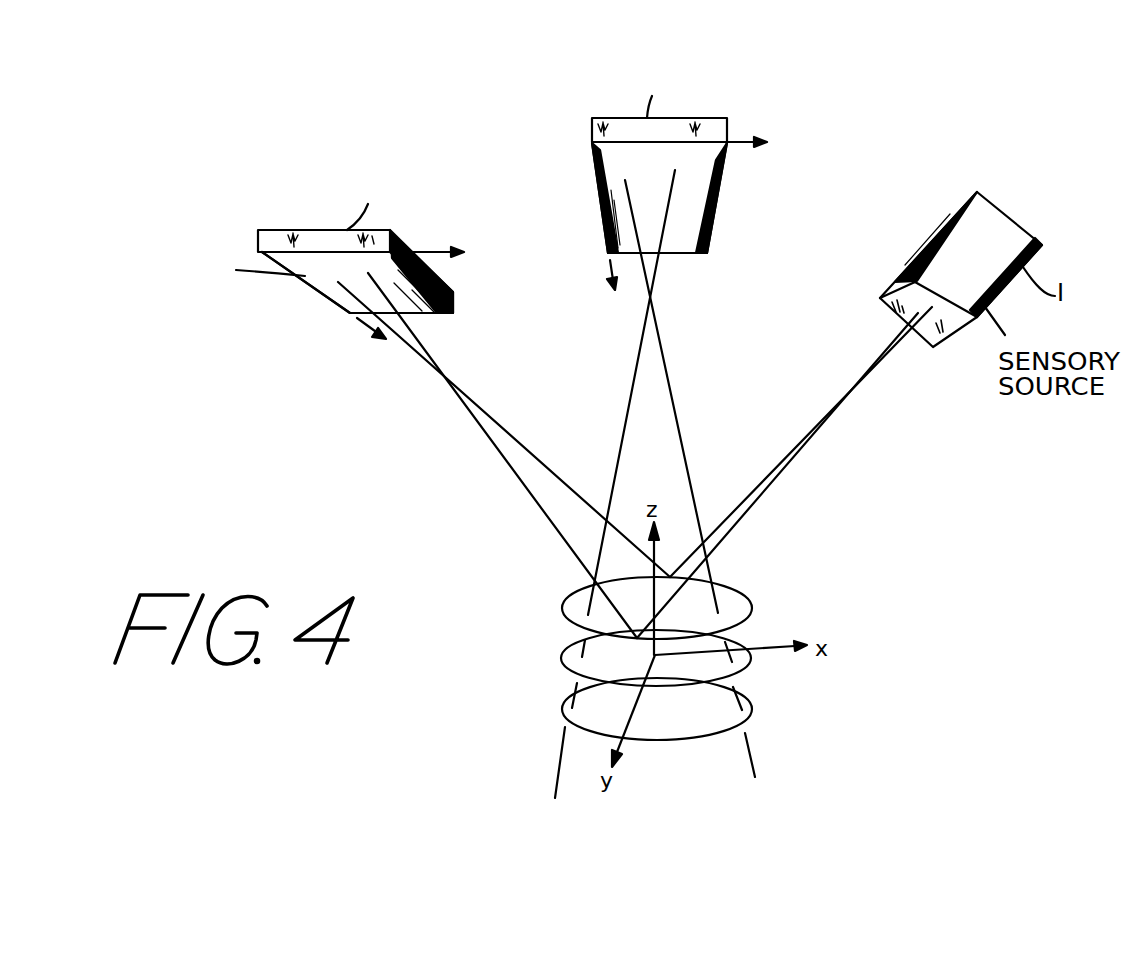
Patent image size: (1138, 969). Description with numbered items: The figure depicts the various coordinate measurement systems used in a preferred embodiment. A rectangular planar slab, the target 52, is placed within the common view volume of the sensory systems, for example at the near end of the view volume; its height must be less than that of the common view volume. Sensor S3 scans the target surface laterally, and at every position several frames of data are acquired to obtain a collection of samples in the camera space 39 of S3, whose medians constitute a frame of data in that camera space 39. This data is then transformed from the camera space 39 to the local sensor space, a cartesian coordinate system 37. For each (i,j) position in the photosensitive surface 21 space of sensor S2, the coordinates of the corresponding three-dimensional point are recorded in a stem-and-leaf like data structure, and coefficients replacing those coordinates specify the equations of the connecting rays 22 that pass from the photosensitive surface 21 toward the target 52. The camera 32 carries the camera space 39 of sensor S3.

The photosensitive surface 21 is at (605, 158).
The connecting rays 22 is at (622, 440).
The camera 32 is at (275, 238).
The camera space 39 is at (322, 277).
The cartesian coordinate system 37 is at (705, 663).
The target 52 is at (692, 738).